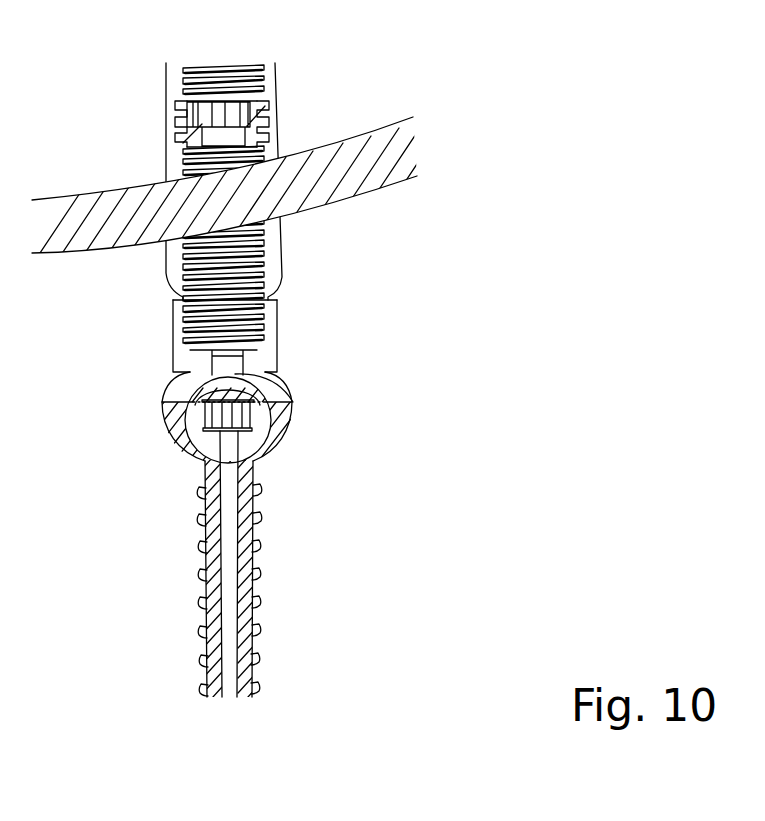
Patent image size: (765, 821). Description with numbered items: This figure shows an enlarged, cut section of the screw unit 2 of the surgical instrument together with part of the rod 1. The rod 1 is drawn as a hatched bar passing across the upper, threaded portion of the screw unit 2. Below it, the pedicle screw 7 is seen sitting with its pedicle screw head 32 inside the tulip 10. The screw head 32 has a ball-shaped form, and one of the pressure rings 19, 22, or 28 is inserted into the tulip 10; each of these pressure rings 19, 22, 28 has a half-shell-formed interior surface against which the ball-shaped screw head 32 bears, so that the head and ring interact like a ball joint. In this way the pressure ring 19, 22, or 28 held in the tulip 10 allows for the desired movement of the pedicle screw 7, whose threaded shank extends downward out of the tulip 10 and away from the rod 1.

The rod 1 is at (345, 178).
The screw unit 2 is at (237, 365).
The pedicle screw 7 is at (264, 487).
The tulip 10 is at (272, 351).
The pressure ring 19 is at (296, 416).
The pressure ring 22 is at (296, 416).
The pressure ring 28 is at (260, 375).
The screw head 32 is at (266, 403).